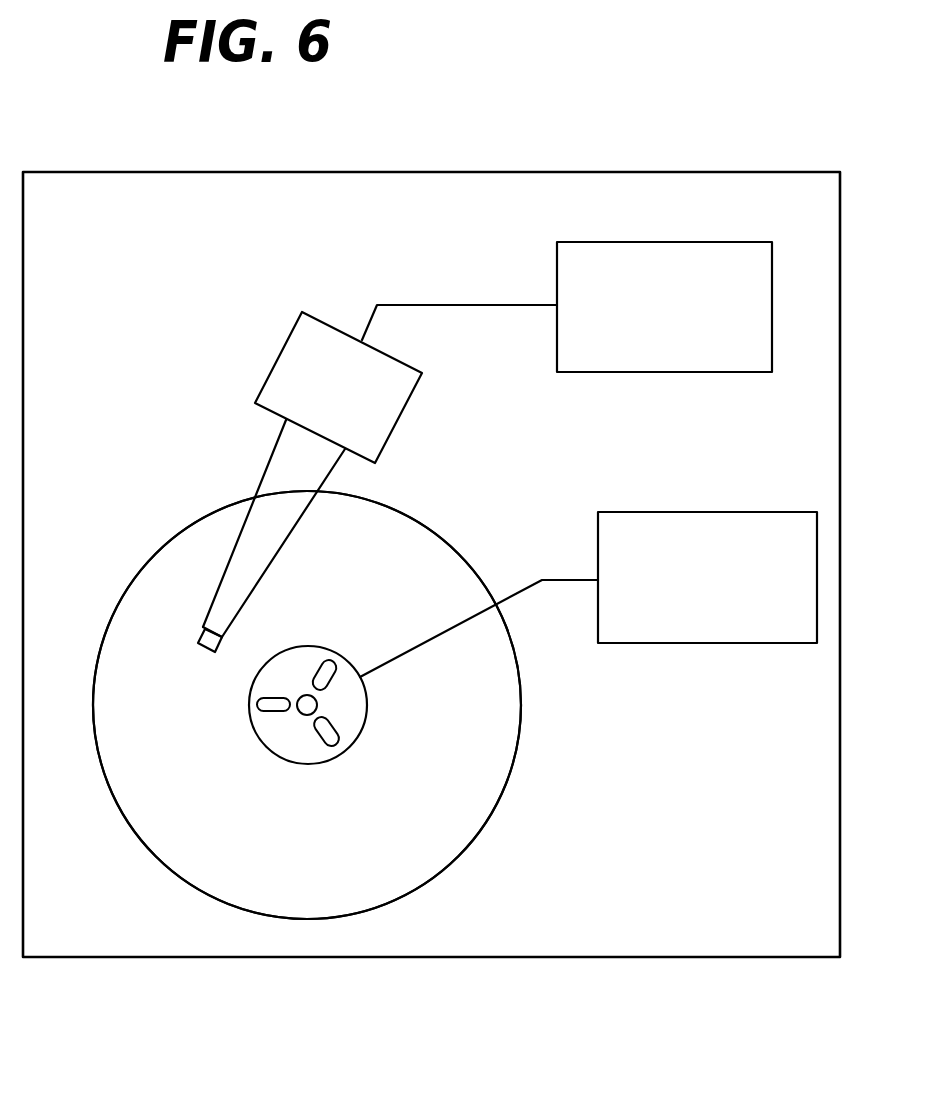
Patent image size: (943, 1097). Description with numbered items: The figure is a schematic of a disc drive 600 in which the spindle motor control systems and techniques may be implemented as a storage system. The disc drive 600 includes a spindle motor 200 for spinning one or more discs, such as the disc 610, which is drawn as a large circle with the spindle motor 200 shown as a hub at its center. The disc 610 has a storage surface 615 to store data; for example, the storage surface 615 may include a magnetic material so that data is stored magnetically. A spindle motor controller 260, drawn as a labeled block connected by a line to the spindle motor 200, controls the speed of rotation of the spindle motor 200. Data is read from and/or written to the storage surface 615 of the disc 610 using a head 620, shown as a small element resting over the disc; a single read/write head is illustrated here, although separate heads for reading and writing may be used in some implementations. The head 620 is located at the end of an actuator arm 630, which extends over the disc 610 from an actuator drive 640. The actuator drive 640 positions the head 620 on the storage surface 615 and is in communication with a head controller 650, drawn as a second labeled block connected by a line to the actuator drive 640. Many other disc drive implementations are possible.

The disc drive 600 is at (758, 118).
The head controller 650 is at (678, 372).
The spindle motor controller 260 is at (715, 643).
The disc 610 is at (520, 747).
The storage surface 615 is at (450, 820).
The spindle motor 200 is at (277, 753).
The actuator drive 640 is at (282, 350).
The actuator arm 630 is at (263, 472).
The head 620 is at (202, 632).